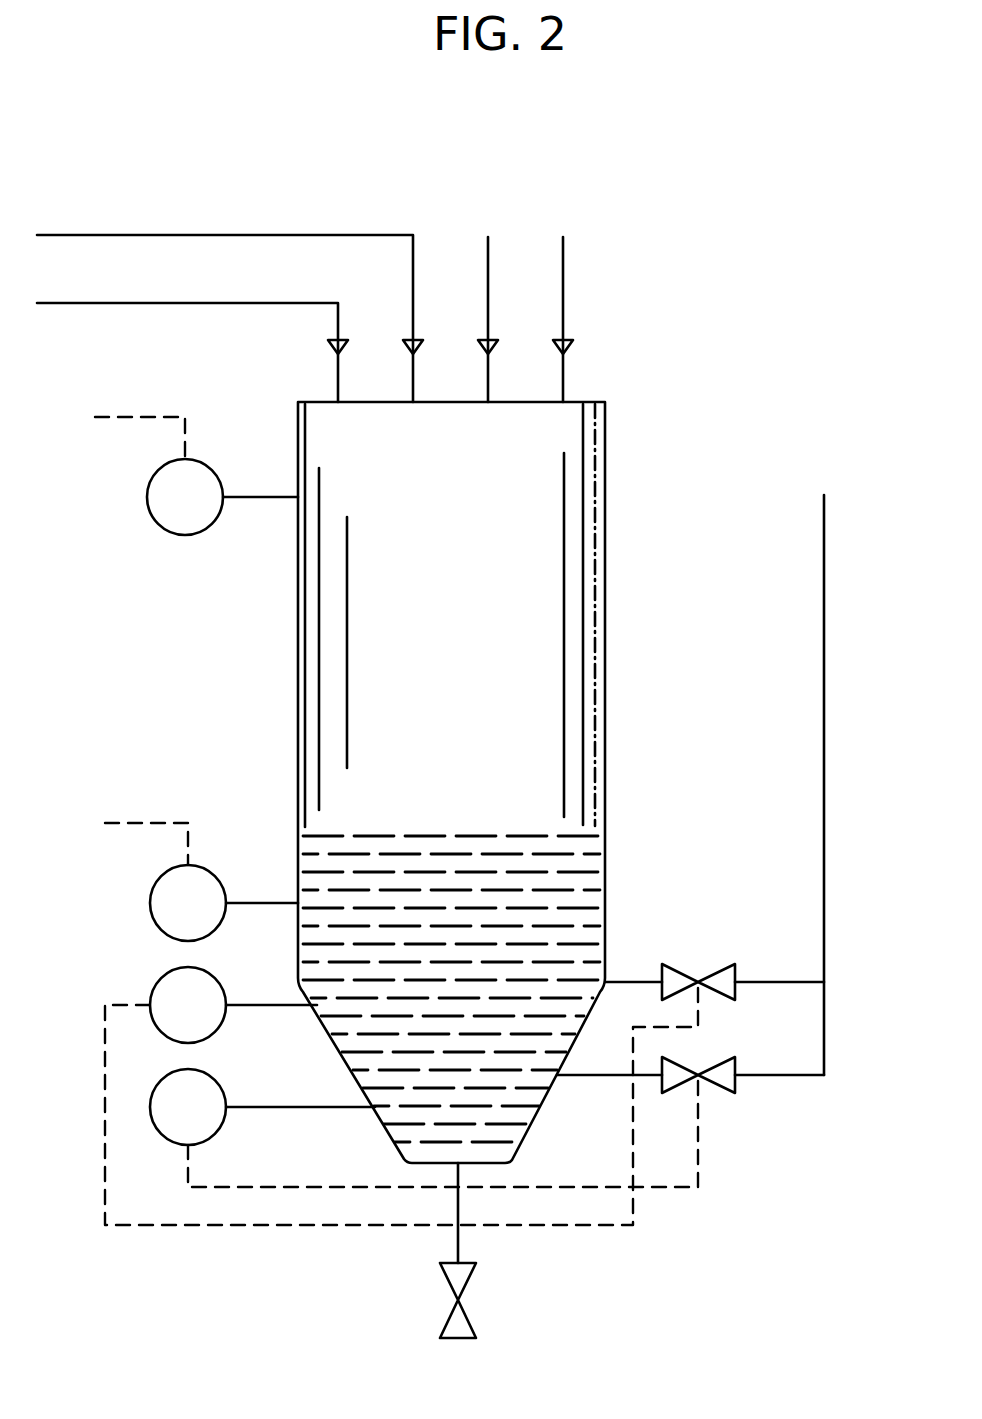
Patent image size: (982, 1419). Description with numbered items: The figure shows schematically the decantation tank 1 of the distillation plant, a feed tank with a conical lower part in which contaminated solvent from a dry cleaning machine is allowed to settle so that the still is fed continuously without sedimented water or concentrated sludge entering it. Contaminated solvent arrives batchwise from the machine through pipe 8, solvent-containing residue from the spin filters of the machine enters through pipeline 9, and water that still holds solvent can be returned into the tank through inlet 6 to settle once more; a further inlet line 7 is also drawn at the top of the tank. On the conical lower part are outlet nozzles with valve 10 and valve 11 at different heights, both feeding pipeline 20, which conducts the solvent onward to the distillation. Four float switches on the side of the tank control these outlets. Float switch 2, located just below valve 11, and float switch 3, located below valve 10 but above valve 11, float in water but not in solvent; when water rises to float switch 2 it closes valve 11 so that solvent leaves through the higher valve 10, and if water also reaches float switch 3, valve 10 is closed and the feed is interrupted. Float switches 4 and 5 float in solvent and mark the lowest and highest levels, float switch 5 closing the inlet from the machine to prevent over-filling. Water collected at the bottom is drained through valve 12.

The decantation tank 1 is at (470, 617).
The float switch 2 is at (152, 1113).
The float switch 3 is at (152, 990).
The float switch 4 is at (152, 896).
The float switch 5 is at (152, 517).
The inlet 6 is at (338, 368).
The inlet line 7 is at (413, 368).
The pipe 8 is at (488, 237).
The pipeline 9 is at (563, 237).
The valve 10 is at (697, 977).
The valve 11 is at (710, 1085).
The valve 12 is at (470, 1278).
The pipeline 20 is at (824, 578).